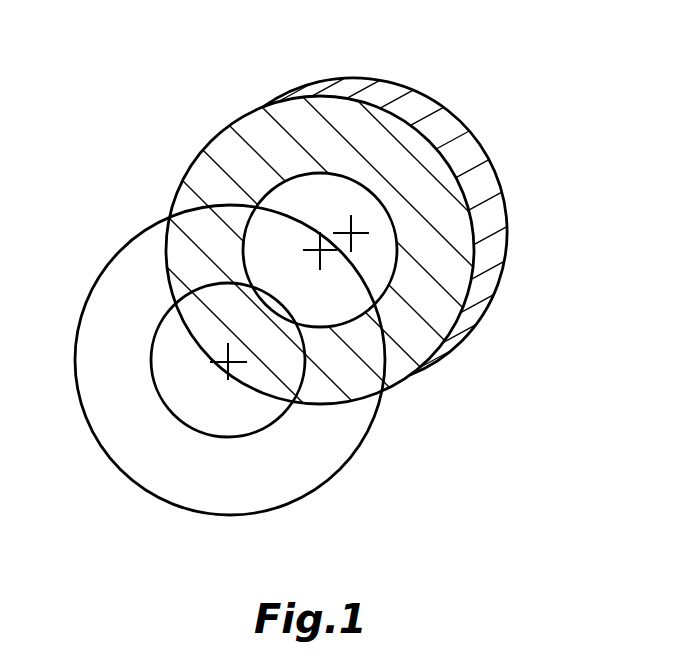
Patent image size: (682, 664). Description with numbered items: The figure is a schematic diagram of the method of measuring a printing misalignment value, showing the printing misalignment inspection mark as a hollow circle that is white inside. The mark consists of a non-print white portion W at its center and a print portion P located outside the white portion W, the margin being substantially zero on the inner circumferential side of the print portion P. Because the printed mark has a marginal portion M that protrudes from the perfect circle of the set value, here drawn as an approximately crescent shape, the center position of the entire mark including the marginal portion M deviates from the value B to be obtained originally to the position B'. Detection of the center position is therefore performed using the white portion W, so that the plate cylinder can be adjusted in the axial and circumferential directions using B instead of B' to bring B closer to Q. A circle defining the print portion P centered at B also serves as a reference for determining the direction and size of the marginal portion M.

The print portion P is at (227, 167).
The white portion W is at (310, 177).
The center position of white portion B is at (224, 215).
The deviated center position B' is at (435, 185).
The marginal portion M is at (496, 271).
The target position Q is at (228, 362).